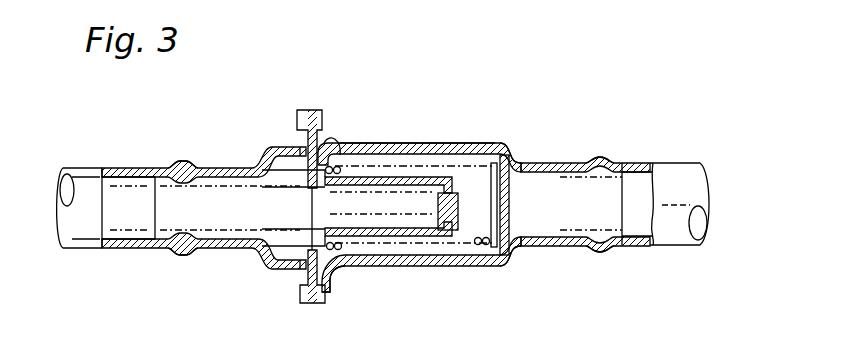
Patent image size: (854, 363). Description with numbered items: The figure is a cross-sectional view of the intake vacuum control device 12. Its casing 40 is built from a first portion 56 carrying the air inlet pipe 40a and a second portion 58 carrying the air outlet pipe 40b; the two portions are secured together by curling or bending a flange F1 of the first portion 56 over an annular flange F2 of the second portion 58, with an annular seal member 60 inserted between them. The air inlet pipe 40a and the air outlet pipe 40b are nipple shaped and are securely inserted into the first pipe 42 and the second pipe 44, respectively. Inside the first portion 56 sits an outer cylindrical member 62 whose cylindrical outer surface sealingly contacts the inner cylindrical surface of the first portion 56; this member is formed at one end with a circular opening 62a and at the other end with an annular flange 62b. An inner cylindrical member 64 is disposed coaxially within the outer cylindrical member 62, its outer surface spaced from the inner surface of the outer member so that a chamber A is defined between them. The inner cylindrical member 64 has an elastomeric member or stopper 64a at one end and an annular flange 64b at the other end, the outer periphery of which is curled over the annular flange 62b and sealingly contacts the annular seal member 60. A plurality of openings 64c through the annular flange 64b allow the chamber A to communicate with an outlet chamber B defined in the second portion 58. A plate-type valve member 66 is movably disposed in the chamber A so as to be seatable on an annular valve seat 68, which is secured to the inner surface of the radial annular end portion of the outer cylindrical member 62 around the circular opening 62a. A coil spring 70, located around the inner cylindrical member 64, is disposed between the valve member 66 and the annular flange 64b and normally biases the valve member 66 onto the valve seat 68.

The intake vacuum control device 12 is at (452, 109).
The casing 40 is at (338, 131).
The air inlet pipe 40a is at (605, 251).
The air outlet pipe 40b is at (193, 257).
The first pipe 42 is at (678, 163).
The second pipe 44 is at (94, 167).
The first portion 56 is at (420, 143).
The second portion 58 is at (262, 163).
The annular seal member 60 is at (298, 303).
The outer cylindrical member 62 is at (390, 144).
The circular opening 62a is at (520, 255).
The annular flange 62b is at (335, 292).
The inner cylindrical member 64 is at (423, 240).
The elastomeric member or stopper 64a is at (458, 234).
The annular flange 64b is at (311, 182).
The openings 64c is at (300, 148).
The valve member 66 is at (528, 178).
The annular valve seat 68 is at (515, 160).
The coil spring 70 is at (463, 143).
The chamber A is at (386, 250).
The outlet chamber B is at (262, 250).
The flange F1 is at (312, 110).
The annular flange F2 is at (304, 132).